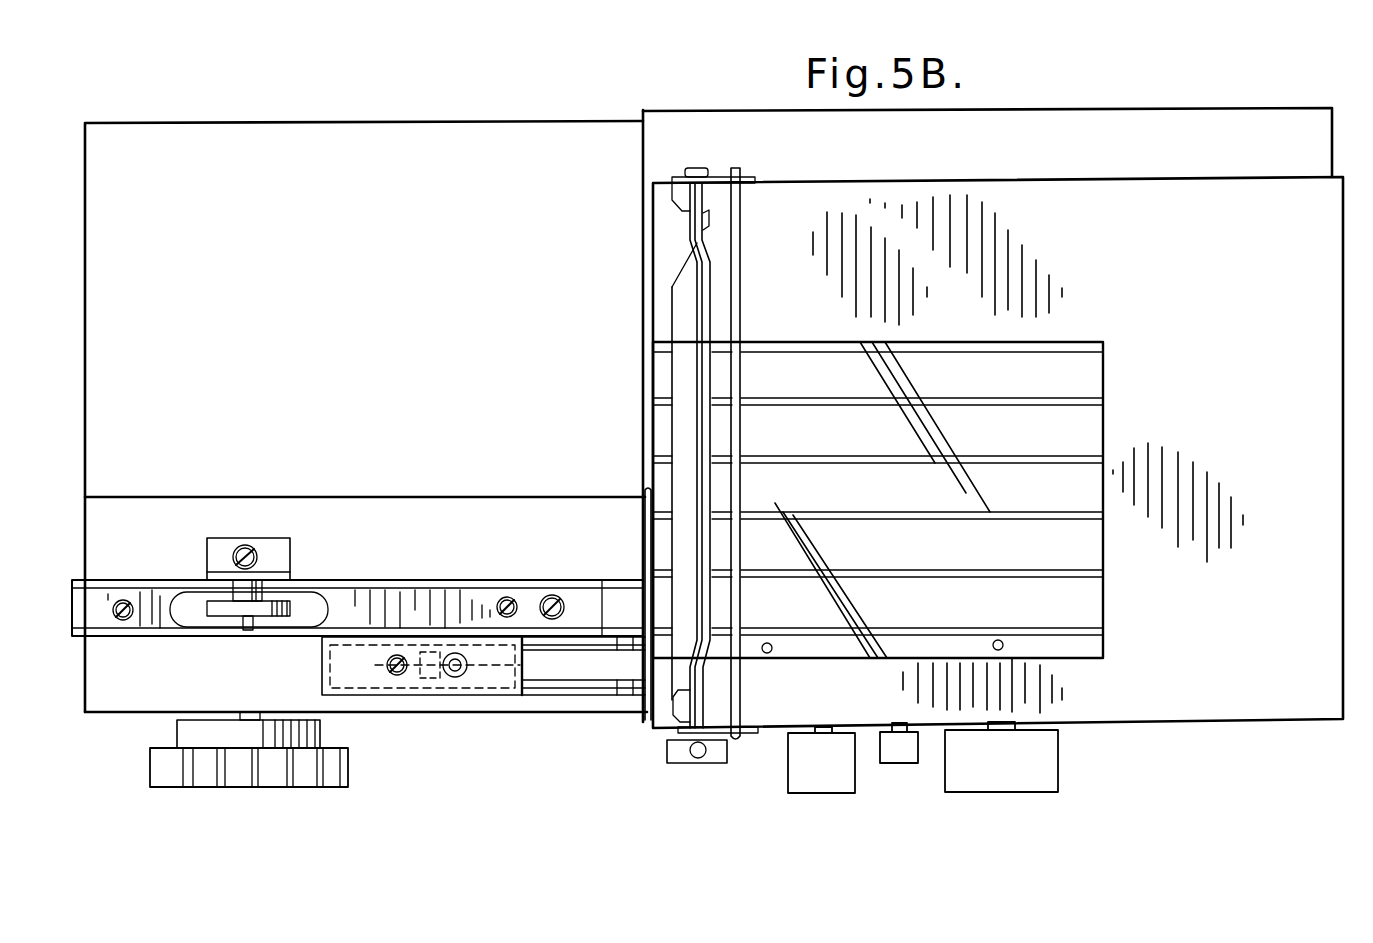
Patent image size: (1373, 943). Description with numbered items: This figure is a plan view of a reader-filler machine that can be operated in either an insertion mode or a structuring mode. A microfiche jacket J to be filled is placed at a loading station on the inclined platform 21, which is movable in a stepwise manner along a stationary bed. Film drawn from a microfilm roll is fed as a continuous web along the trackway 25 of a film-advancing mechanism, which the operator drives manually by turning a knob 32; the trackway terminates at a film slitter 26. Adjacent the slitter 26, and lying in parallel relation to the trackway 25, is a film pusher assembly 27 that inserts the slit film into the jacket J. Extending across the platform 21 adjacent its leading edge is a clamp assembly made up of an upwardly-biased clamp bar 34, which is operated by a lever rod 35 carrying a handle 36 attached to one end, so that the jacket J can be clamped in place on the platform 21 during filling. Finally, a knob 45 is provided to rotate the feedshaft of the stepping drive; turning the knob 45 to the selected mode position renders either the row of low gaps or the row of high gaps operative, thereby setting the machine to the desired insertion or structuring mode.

The inclined platform 21 is at (1215, 705).
The microfiche jacket J is at (1103, 375).
The trackway 25 is at (618, 592).
The film slitter 26 is at (652, 490).
The film pusher assembly 27 is at (568, 667).
The knob 32 is at (348, 762).
The clamp bar 34 is at (723, 222).
The lever rod 35 is at (710, 276).
The handle 36 is at (675, 762).
The knob 45 is at (1045, 772).